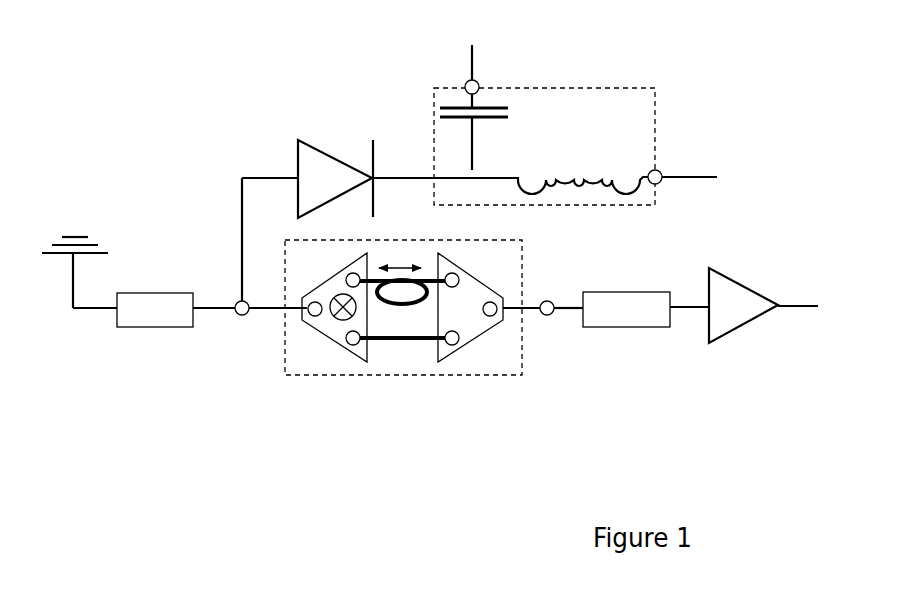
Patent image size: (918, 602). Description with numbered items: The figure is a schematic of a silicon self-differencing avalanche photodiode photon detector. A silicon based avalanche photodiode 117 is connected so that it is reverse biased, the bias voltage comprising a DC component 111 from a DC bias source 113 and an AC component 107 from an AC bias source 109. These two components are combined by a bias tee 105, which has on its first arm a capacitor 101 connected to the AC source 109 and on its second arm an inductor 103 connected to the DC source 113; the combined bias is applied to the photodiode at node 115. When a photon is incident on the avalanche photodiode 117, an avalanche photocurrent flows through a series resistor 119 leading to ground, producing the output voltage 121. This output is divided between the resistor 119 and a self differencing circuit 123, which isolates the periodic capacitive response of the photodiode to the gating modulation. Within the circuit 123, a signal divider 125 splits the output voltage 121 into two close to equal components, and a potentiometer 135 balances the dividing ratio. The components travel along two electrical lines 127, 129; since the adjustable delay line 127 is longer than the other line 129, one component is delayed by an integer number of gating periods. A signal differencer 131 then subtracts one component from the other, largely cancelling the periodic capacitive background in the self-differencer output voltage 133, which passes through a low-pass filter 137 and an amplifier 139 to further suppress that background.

The capacitor 101 is at (437, 110).
The inductor 103 is at (593, 204).
The bias tee 105 is at (544, 146).
The AC component V_AC 107 is at (496, 82).
The AC bias source 109 is at (504, 28).
The DC component V_DC 111 is at (677, 191).
The DC bias source 113 is at (768, 179).
The avalanche photodiode bias node Vapd 115 is at (403, 178).
The silicon based avalanche photodiode 117 is at (290, 164).
The resistor 119 is at (153, 330).
The output voltage V_out 121 is at (225, 354).
The self differencing circuit 123 is at (404, 307).
The signal divider 125 is at (330, 331).
The electrical line 127 is at (400, 307).
The electrical line 129 is at (419, 343).
The signal differencer 131 is at (469, 339).
The self-differencer output voltage V_sd 133 is at (556, 312).
The potentiometer 135 is at (330, 300).
The low-pass filter 137 is at (631, 331).
The amplifier 139 is at (748, 318).